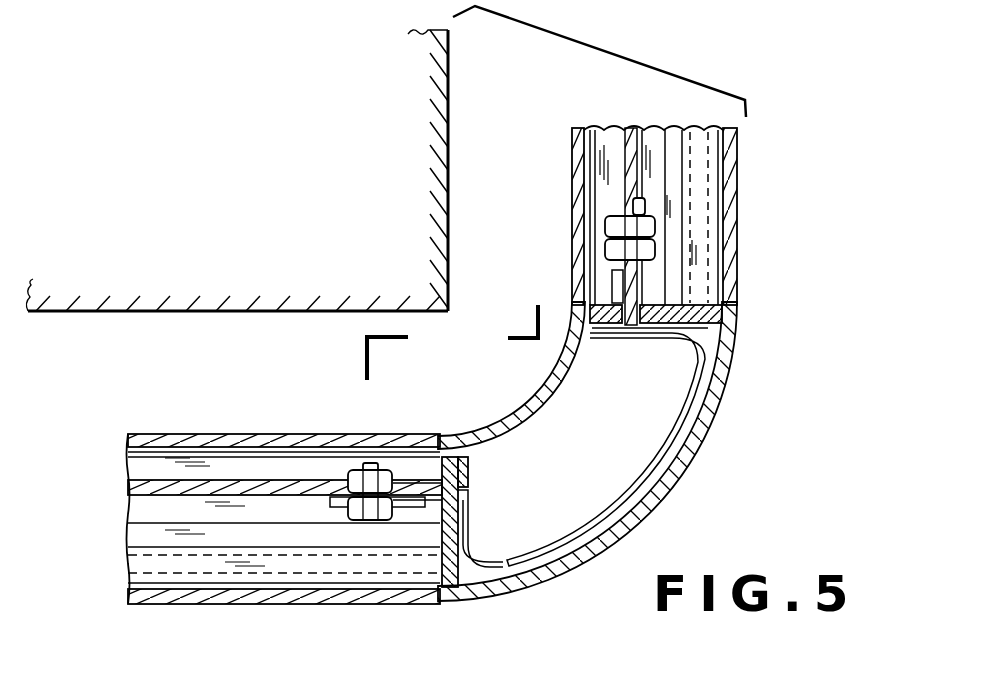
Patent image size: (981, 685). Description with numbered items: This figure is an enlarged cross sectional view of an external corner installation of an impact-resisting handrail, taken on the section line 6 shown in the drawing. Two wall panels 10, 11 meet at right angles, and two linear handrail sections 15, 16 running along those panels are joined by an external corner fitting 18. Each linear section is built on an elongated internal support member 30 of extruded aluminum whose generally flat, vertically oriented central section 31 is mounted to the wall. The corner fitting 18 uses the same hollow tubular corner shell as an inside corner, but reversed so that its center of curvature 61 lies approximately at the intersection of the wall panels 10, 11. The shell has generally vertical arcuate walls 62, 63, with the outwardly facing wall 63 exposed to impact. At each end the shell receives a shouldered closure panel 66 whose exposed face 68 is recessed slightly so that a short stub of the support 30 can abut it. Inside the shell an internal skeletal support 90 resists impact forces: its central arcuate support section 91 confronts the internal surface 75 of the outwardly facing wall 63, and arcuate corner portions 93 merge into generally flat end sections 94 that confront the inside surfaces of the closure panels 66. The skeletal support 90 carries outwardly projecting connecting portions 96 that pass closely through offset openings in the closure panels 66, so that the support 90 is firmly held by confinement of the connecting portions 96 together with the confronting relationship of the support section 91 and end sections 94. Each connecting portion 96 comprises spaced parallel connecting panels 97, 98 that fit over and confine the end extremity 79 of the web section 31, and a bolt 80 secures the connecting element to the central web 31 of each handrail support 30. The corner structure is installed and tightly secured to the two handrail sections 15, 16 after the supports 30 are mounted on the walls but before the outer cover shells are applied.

The section line 6- 6 is at (540, 80).
The wall panel 10 is at (114, 311).
The intermediate wall panel 11 is at (448, 232).
The linear handrail section 15 is at (222, 425).
The linear handrail section 16 is at (754, 179).
The external corner fitting 18 is at (597, 447).
The internal support member 30 is at (263, 462).
The central section 31 is at (153, 498).
The center of curvature 61 is at (450, 311).
The arcuate wall 62 is at (512, 412).
The outwardly facing wall 63 is at (702, 450).
The closure panel 66 is at (690, 312).
The exposed face 68 is at (736, 325).
The internal surface 75 is at (718, 340).
The end extremity 79 is at (402, 510).
The bolt 80 is at (645, 242).
The internal skeletal support 90 is at (656, 403).
The central arcuate support section 91 is at (598, 520).
The arcuate corner portion 93 is at (473, 560).
The end section 94 is at (589, 338).
The connecting portion 96 is at (418, 443).
The connecting panel 97 is at (335, 510).
The connecting panel 98 is at (393, 443).